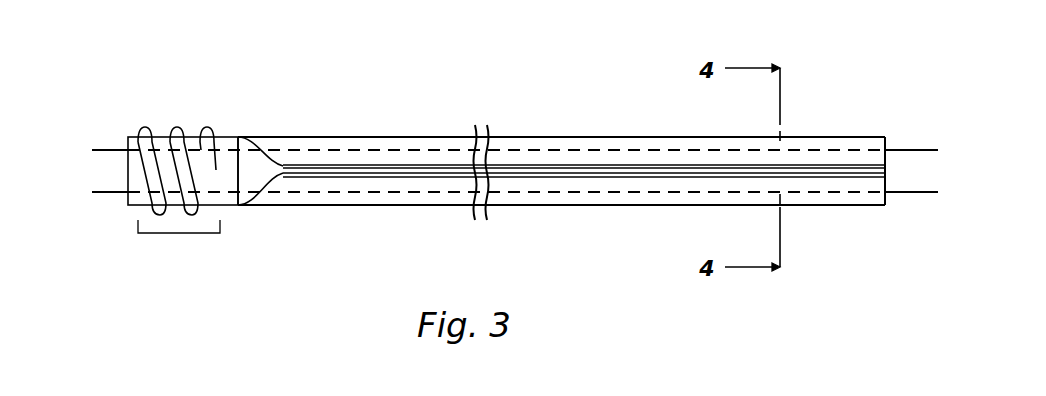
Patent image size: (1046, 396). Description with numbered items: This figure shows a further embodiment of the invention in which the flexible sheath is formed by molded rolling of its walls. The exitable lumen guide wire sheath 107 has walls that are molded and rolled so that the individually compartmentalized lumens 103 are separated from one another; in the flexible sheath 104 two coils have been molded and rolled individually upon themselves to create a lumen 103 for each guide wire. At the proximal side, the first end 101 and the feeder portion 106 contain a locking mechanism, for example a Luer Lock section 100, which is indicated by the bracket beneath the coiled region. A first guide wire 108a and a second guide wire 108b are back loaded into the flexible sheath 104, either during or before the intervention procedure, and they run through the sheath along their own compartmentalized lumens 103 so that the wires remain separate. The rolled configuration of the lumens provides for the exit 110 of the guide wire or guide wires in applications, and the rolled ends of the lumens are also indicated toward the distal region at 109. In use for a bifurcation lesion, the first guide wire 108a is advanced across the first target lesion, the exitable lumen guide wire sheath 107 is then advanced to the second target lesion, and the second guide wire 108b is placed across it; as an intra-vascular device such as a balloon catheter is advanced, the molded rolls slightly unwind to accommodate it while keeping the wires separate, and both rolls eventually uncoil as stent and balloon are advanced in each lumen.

The Luer Lock section 100 is at (177, 233).
The first end 101 is at (128, 172).
The individually compartmentalized lumens 103 is at (328, 163).
The flexible sheath 104 is at (437, 137).
The feeder portion 106 is at (194, 128).
The exitable lumen guide wire sheath 107 is at (288, 137).
The first guide wire 108a is at (92, 150).
The second guide wire 108b is at (102, 195).
The fiber ends 109 is at (825, 185).
The exit 110 is at (538, 177).